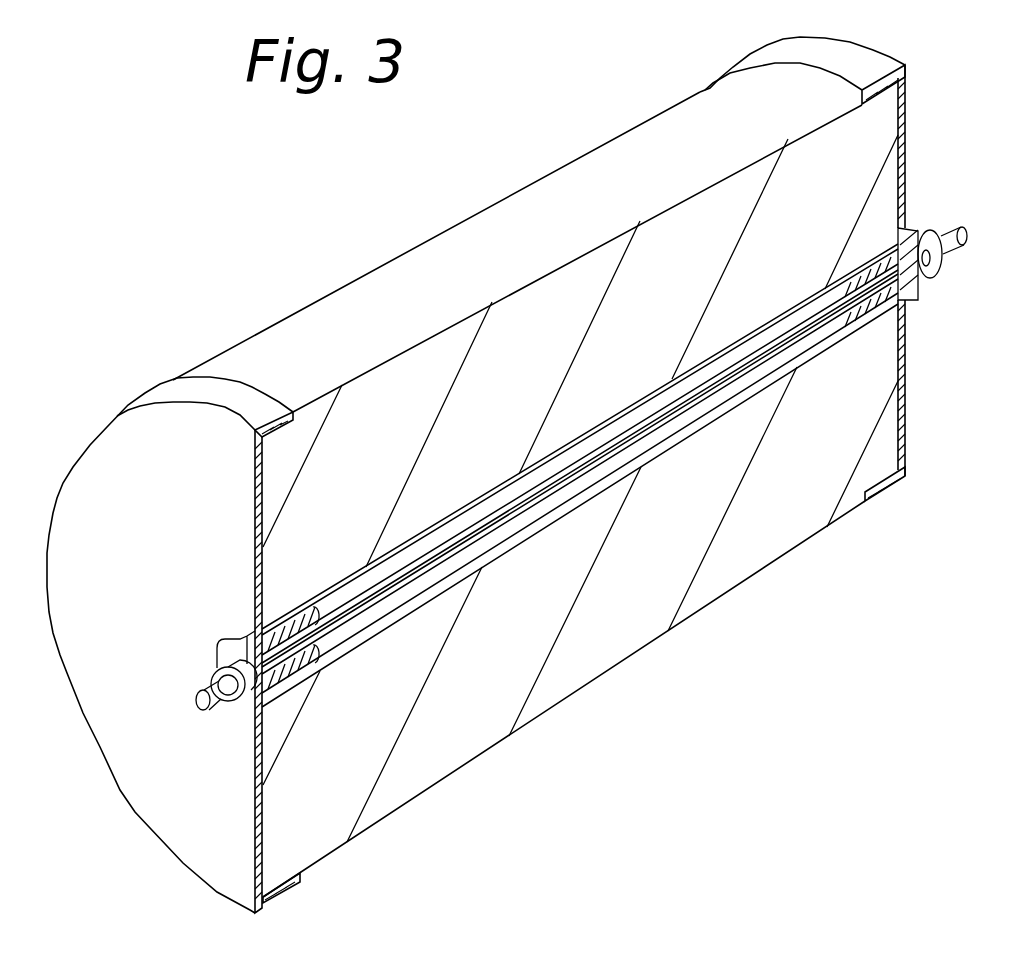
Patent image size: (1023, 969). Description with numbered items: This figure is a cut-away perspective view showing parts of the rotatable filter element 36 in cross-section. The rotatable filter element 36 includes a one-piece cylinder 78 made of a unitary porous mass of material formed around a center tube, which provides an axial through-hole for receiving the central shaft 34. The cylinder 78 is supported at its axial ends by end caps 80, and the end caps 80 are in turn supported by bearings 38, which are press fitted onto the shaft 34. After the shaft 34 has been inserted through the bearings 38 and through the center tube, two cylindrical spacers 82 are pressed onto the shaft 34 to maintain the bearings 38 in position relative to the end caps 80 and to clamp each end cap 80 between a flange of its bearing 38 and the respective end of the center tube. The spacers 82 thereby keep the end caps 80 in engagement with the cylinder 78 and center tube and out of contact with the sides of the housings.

The rotatable filter element 36 is at (318, 246).
The one-piece cylinder 78 is at (597, 180).
The end caps 80 is at (880, 64).
The central shaft 34 is at (948, 237).
The bearings 38 is at (918, 288).
The cylindrical spacers 82 is at (945, 258).